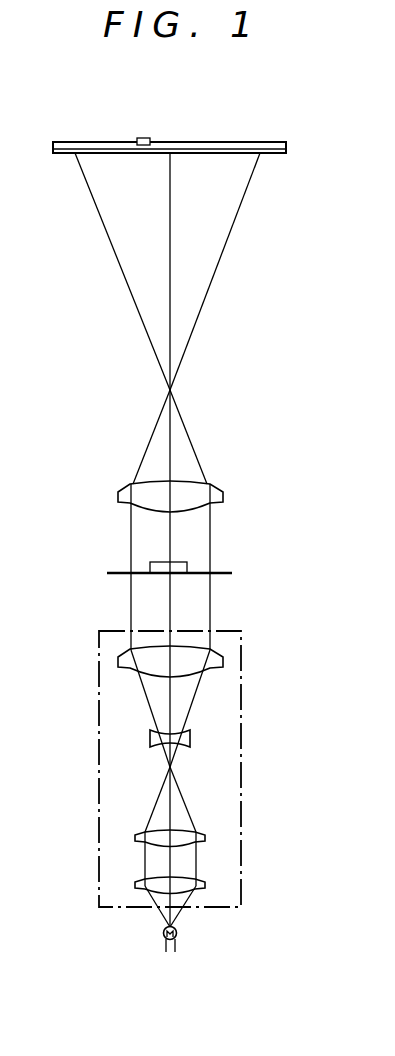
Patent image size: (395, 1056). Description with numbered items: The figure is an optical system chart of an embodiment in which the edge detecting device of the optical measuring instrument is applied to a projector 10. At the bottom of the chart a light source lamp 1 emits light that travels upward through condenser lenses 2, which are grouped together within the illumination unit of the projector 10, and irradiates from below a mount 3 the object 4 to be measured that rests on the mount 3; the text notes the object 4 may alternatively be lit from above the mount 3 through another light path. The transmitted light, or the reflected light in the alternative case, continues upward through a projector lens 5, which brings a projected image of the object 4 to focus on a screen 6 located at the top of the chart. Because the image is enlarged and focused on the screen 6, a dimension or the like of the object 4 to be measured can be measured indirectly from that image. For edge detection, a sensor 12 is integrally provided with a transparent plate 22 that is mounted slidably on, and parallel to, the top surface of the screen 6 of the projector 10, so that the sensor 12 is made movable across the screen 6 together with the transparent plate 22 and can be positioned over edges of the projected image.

The light source lamp 1 is at (177, 933).
The condenser lenses 2 is at (242, 790).
The mount 3 is at (233, 573).
The object to be measured 4 is at (185, 561).
The projector lens 5 is at (213, 478).
The screen 6 is at (268, 155).
The projector 10 is at (230, 498).
The sensor 12 is at (143, 138).
The transparent plate 22 is at (270, 142).